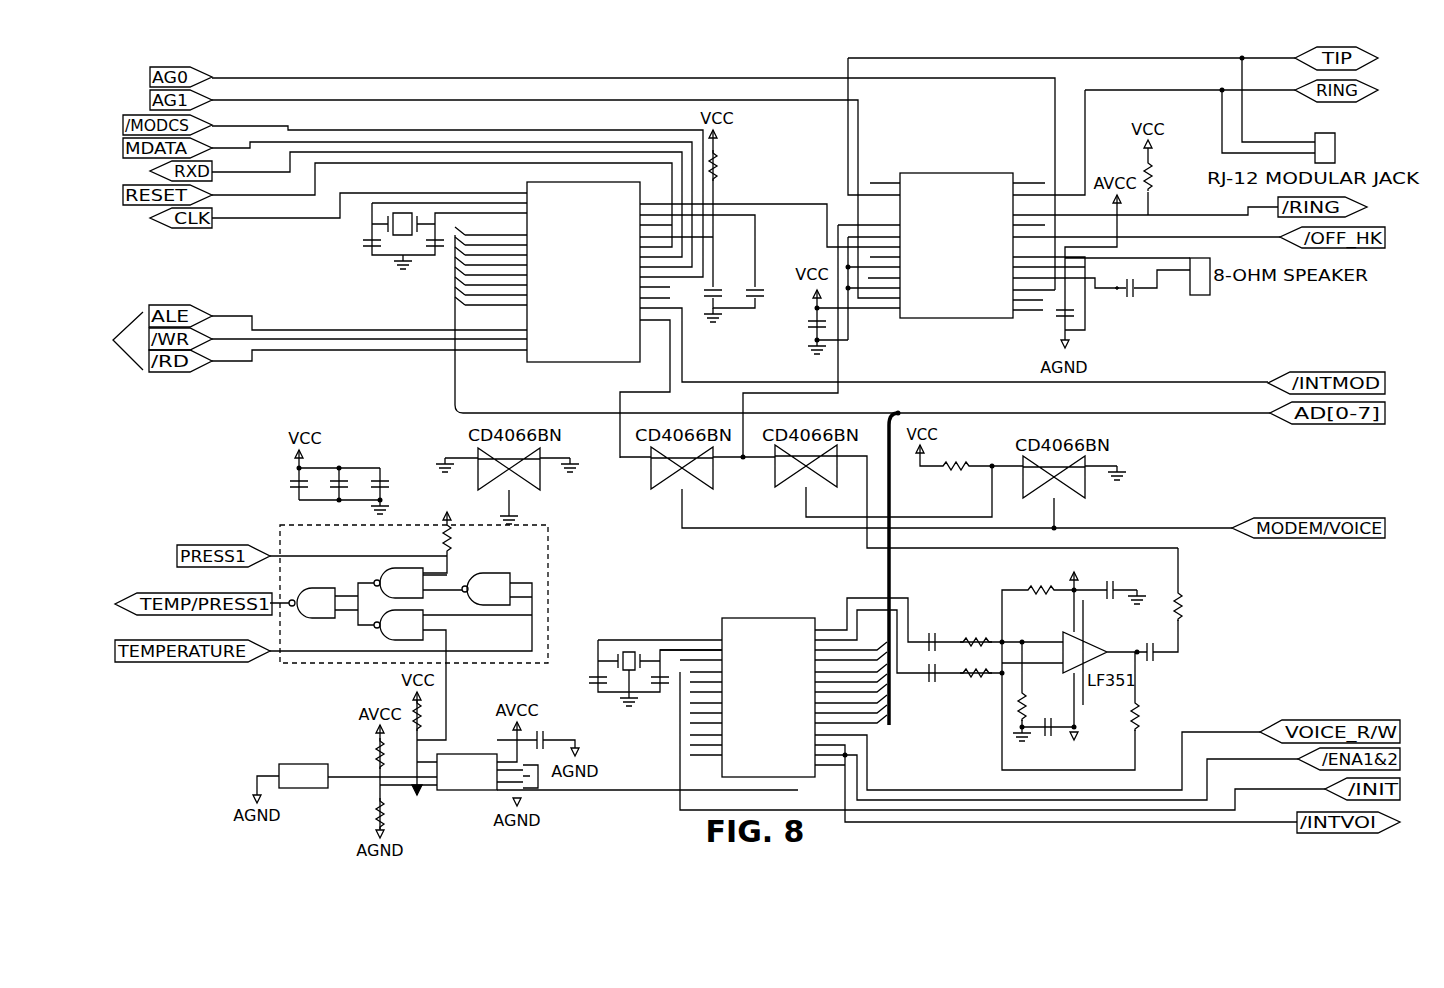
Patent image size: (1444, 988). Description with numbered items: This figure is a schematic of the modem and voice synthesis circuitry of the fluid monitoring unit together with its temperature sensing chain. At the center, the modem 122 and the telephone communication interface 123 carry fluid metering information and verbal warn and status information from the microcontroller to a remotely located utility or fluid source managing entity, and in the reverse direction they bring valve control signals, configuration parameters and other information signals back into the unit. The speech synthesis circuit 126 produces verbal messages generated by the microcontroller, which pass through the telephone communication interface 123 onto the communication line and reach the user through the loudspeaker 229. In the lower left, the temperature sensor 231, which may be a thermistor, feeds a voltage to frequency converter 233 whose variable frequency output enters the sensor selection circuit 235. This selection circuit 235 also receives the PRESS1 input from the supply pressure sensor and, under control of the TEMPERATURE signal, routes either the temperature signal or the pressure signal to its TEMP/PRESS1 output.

The modem 122 is at (566, 298).
The telephone communication interface 123 is at (938, 270).
The speech synthesis circuit 126 is at (750, 727).
The loudspeaker 229 is at (1205, 295).
The temperature sensor 231 is at (292, 785).
The voltage to frequency converter 233 is at (456, 781).
The sensor selection circuit 235 is at (292, 523).